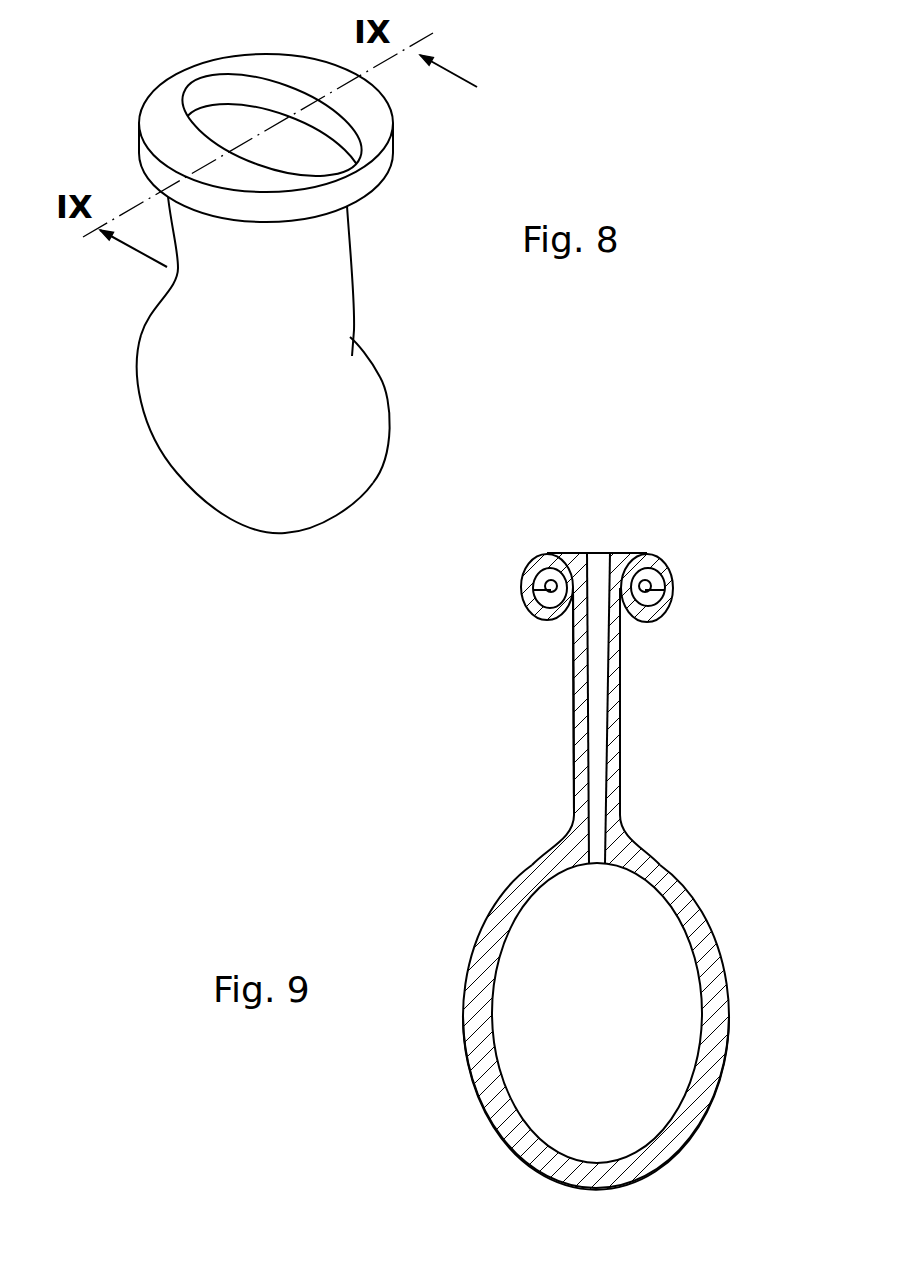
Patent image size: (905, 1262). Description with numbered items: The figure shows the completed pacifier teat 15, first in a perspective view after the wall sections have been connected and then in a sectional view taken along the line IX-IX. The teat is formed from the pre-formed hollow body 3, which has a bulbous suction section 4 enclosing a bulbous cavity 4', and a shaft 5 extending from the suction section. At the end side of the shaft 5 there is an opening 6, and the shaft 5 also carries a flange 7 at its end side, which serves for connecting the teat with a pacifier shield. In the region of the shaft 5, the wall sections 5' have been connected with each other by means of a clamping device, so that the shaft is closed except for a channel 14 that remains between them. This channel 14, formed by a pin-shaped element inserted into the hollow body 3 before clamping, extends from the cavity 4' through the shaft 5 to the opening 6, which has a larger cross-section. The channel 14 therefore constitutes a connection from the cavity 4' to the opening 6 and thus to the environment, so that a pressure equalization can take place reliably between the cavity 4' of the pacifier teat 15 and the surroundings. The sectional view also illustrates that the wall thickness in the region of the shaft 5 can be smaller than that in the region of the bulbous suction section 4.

In FIG. 8, the pre-formed hollow body 3 is at (383, 465).
In FIG. 9, the suction section 4 is at (653, 1027).
In FIG. 9, the bulbous cavity 4' is at (544, 1013).
In FIG. 8, the shaft 5 is at (325, 276).
In FIG. 9, the shaft 5 is at (546, 726).
In FIG. 9, the wall sections 5' is at (596, 701).
In FIG. 8, the opening 6 is at (235, 133).
In FIG. 9, the opening 6 is at (593, 570).
In FIG. 8, the flange 7 is at (163, 120).
In FIG. 9, the channel 14 is at (597, 790).
In FIG. 8, the pacifier teat 15 is at (148, 467).
In FIG. 9, the pacifier teat 15 is at (738, 1095).